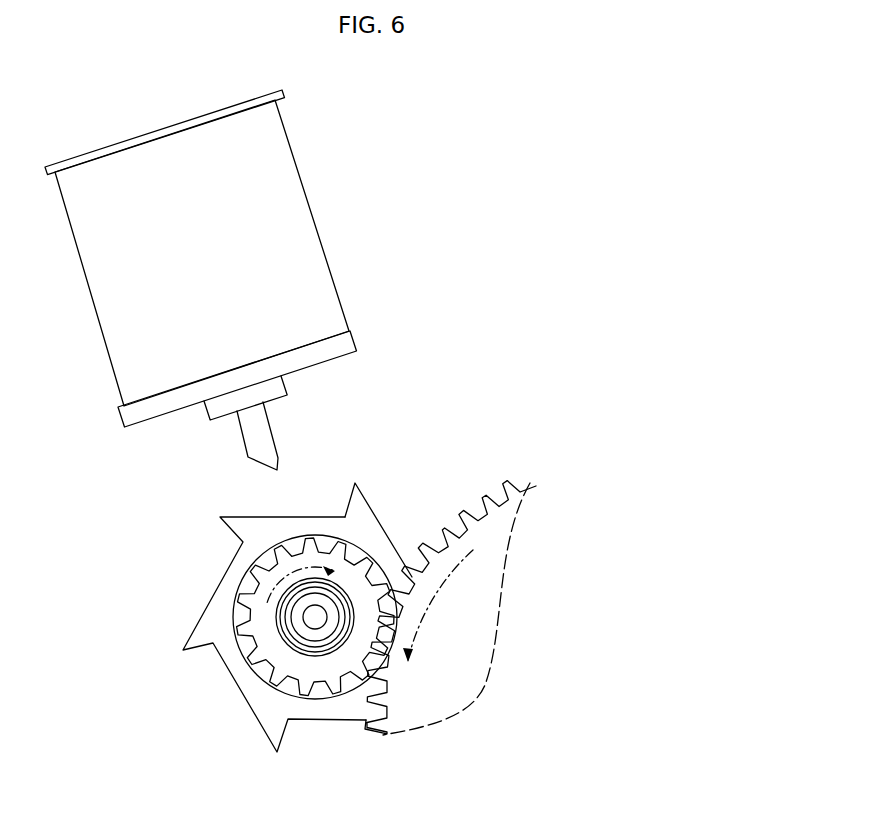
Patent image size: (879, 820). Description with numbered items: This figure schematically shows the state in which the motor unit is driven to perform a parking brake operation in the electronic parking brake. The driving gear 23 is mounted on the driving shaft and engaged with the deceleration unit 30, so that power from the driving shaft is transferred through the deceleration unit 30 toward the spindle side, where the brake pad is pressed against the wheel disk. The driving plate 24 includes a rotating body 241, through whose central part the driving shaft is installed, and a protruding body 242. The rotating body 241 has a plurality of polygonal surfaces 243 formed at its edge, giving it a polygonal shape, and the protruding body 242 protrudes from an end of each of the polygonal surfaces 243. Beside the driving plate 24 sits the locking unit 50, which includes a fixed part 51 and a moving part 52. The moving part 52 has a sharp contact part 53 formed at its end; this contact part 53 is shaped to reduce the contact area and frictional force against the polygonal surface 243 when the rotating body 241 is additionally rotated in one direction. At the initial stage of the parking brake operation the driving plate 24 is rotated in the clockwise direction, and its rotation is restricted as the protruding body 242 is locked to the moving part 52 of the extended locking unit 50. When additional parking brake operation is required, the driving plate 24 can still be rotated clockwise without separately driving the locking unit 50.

The locking unit 50 is at (590, 272).
The fixed part 51 is at (307, 280).
The moving part 52 is at (258, 432).
The contact part 53 is at (272, 468).
The driving plate 24 is at (652, 413).
The rotating body 241 is at (370, 523).
The protruding body 242 is at (355, 483).
The polygonal surfaces 243 is at (207, 602).
The driving gear 23 is at (285, 653).
The deceleration unit 30 is at (494, 583).